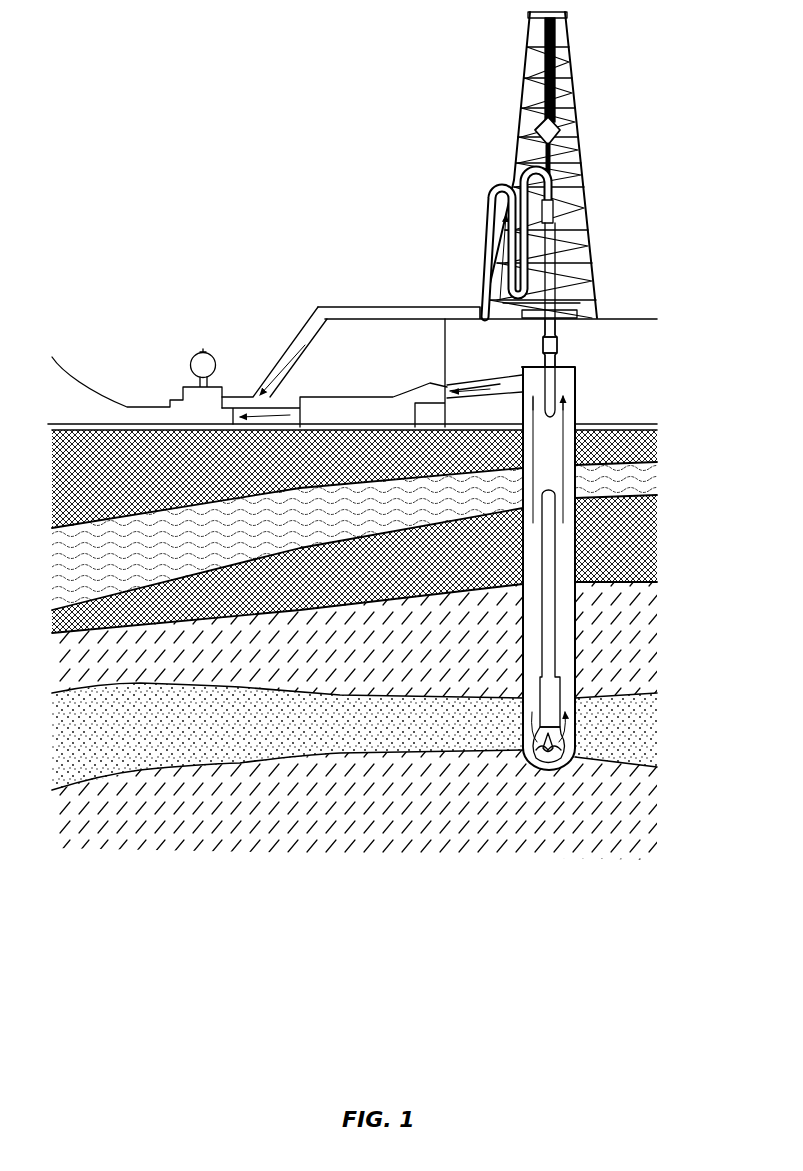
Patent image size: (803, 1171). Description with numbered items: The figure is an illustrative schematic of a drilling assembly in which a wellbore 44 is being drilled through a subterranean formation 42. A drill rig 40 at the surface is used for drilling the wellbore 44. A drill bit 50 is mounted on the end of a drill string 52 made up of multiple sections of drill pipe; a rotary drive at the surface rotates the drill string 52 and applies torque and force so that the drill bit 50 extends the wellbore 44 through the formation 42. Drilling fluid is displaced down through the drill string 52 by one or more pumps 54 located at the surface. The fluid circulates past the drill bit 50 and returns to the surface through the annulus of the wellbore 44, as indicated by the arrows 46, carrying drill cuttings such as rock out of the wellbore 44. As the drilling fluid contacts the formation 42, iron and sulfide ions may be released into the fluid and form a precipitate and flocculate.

The drill rig 40 is at (637, 185).
The subterranean formation 42 is at (369, 653).
The wellbore 44 is at (577, 405).
The arrows 46 is at (563, 490).
The drill bit 50 is at (577, 747).
The drill string 52 is at (565, 353).
The pumps 54 is at (180, 387).